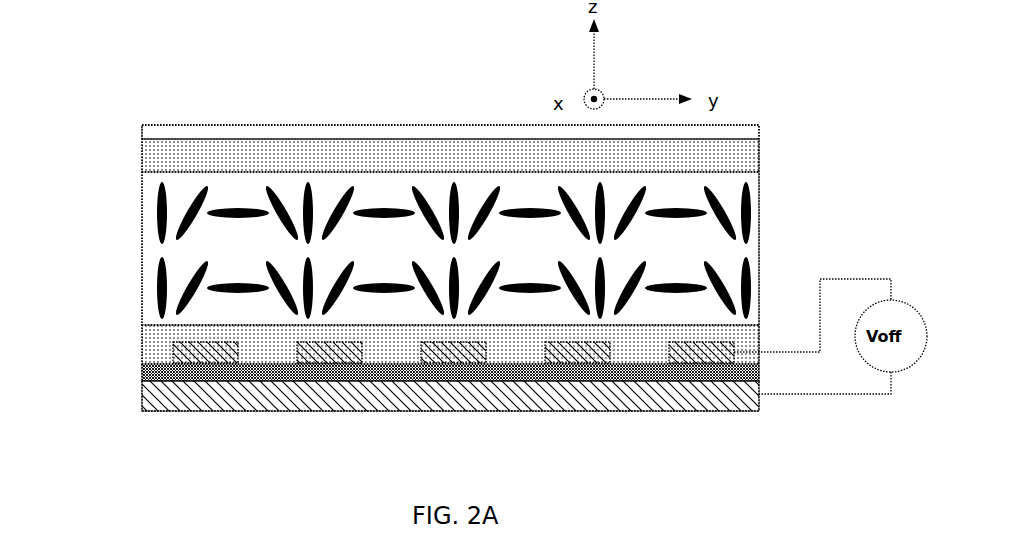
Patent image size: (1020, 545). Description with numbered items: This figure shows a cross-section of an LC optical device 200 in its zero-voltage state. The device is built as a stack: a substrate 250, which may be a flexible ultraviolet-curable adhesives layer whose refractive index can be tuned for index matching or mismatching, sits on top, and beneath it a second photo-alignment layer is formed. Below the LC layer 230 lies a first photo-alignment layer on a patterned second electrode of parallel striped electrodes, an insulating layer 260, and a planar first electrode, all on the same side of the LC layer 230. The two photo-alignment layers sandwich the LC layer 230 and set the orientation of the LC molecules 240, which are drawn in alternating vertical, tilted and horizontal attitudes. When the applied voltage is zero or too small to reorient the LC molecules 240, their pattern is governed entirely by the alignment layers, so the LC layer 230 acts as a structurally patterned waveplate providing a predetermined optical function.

The LC optical device 200 is at (69, 49).
The substrate 250 is at (170, 133).
The LC molecules 240 is at (160, 214).
The LC layer 230 is at (153, 255).
The insulating layer 260 is at (157, 380).